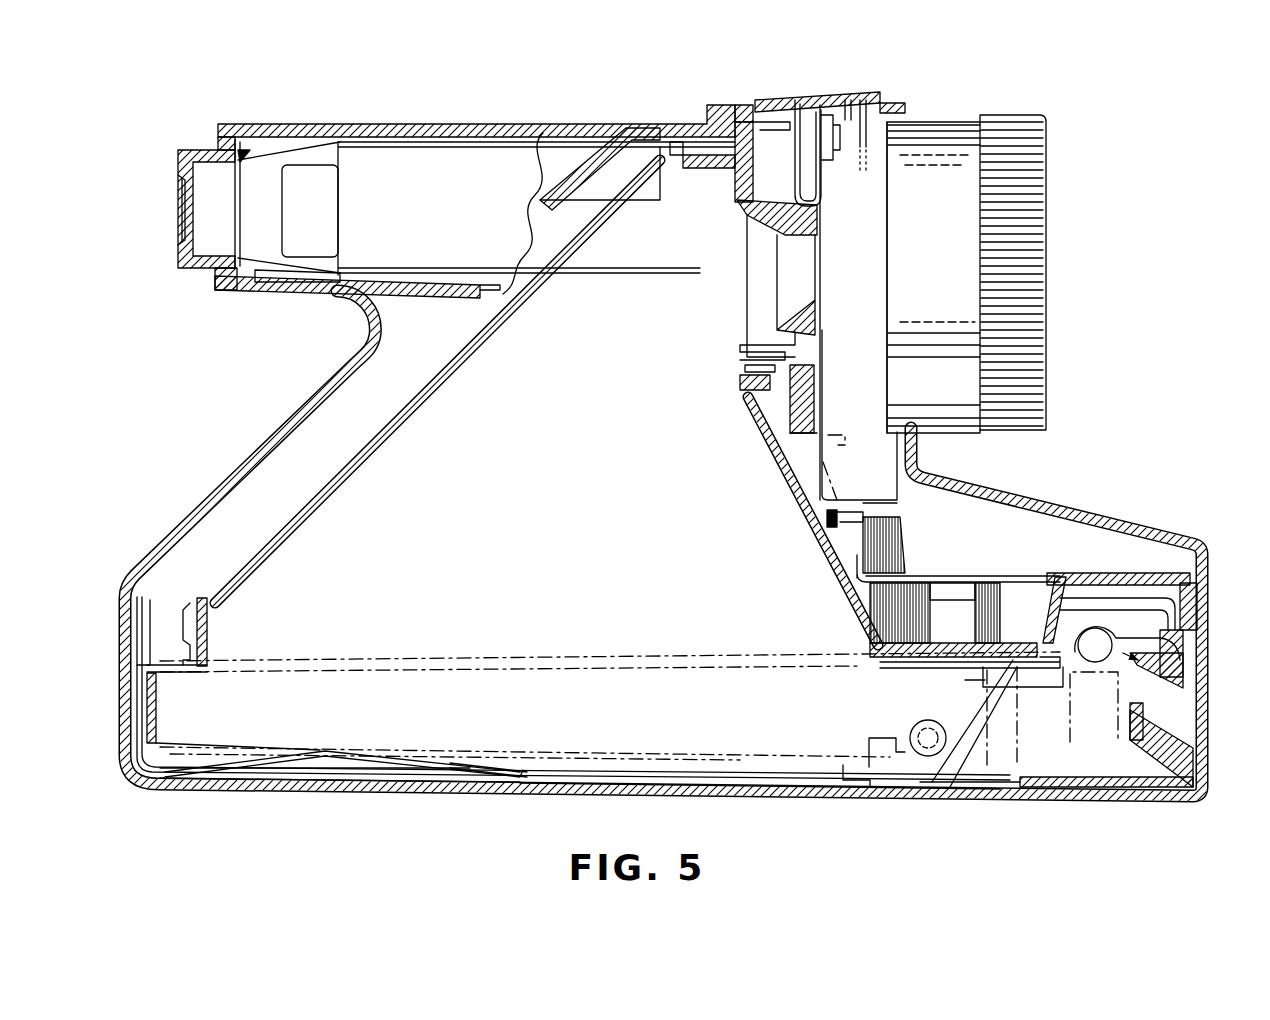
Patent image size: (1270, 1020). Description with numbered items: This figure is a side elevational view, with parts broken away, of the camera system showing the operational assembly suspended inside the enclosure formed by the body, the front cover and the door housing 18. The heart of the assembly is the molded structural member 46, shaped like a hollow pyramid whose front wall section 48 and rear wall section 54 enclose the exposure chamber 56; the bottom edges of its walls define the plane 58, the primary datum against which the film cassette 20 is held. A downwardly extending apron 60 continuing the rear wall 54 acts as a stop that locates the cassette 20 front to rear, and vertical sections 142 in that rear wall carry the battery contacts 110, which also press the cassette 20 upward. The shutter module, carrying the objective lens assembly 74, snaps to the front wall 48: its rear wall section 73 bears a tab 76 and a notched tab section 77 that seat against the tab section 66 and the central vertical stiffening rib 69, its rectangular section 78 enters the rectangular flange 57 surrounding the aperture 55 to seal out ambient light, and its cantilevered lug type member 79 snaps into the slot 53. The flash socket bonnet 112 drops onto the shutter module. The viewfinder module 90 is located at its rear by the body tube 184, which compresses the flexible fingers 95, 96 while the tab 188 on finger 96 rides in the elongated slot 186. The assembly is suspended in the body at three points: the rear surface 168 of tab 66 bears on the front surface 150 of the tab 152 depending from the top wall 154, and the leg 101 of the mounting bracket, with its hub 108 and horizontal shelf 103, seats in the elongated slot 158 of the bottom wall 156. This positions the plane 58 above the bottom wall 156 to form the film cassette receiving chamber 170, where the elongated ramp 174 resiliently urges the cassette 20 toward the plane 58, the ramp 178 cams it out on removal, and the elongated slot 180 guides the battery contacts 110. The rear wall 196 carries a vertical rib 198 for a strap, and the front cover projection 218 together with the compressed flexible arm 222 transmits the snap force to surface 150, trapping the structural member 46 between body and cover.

The door housing 18 is at (1216, 765).
The cassette 20 is at (770, 798).
The structural member 46 is at (458, 323).
The front wall section 48 is at (820, 548).
The slot 53 is at (740, 350).
The rear wall section 54 is at (278, 530).
The aperture 55 is at (745, 262).
The exposure chamber 56 is at (427, 447).
The rectangular flange 57 is at (757, 203).
The plane 58 is at (520, 660).
The apron 60 is at (148, 703).
The tab section 66 is at (800, 103).
The central vertical stiffening rib 69 is at (870, 600).
The rear wall section 73 is at (790, 408).
The objective lens assembly 74 is at (1022, 130).
The tab 76 is at (783, 156).
The notched tab section 77 is at (830, 520).
The rectangular section 78 is at (780, 275).
The cantilevered lug type member 79 is at (745, 372).
The viewfinder module 90 is at (268, 206).
The flexible finger 95 is at (270, 155).
The flexible finger 96 is at (272, 262).
The leg 101 is at (910, 702).
The horizontal shelf 103 is at (990, 690).
The hub 108 is at (930, 735).
The battery contacts 110 is at (340, 775).
The flash socket bonnet 112 is at (880, 96).
The vertical section 142 is at (185, 620).
The front surface 150 is at (765, 125).
The tab 152 is at (640, 135).
The top wall 154 is at (700, 124).
The bottom wall 156 is at (695, 798).
The elongated slot 158 is at (918, 800).
The rear surface 168 is at (728, 165).
The film cassette receiving chamber 170 is at (455, 762).
The elongated ramp 174 is at (843, 788).
The ramp 178 is at (900, 665).
The elongated slot 180 is at (430, 795).
The tube 184 is at (418, 133).
The elongated slot 186 is at (323, 283).
The tab 188 is at (262, 280).
The rear wall 196 is at (212, 508).
The vertical rib 198 is at (143, 620).
The projection 218 is at (838, 115).
The flexible arm 222 is at (1060, 587).